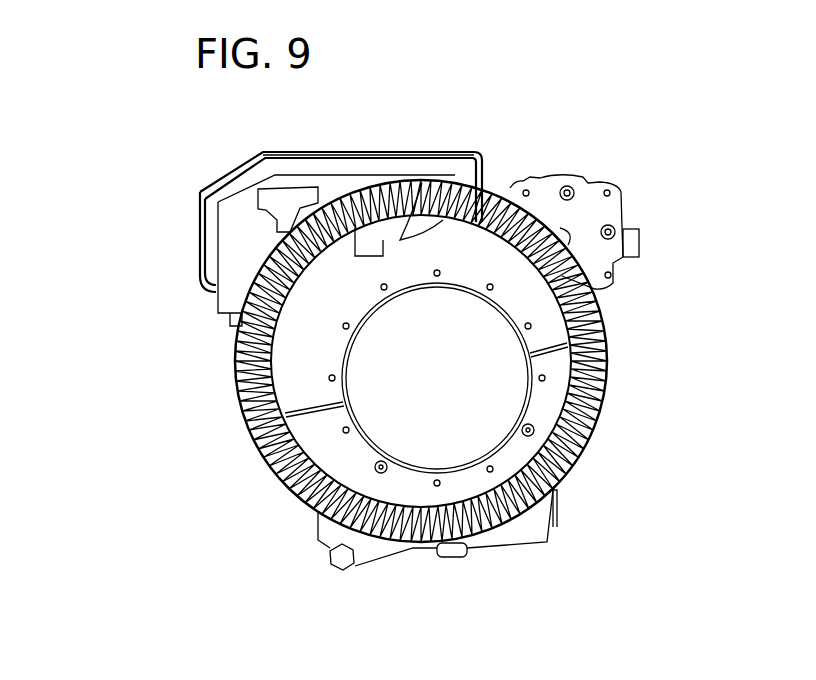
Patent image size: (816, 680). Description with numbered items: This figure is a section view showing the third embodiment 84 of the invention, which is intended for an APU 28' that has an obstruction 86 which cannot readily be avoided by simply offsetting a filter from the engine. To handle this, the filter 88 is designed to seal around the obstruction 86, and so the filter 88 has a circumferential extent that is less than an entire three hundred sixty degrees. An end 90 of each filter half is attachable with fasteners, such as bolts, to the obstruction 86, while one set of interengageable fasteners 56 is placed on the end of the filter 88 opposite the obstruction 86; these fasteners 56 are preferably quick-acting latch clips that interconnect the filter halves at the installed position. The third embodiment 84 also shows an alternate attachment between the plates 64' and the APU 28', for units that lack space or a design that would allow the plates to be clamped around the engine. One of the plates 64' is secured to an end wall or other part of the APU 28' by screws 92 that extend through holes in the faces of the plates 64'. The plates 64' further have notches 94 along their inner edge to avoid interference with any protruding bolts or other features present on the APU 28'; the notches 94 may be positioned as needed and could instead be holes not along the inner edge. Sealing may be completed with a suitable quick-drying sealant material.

The APU 28' is at (304, 356).
The third embodiment 84 is at (515, 142).
The obstruction 86 is at (452, 182).
The filter 88 is at (237, 398).
The end of filter half 90 is at (388, 182).
The screws 92 is at (535, 372).
The notches 94 is at (521, 425).
The plates 64' is at (506, 378).
The interengageable fasteners 56 is at (457, 558).